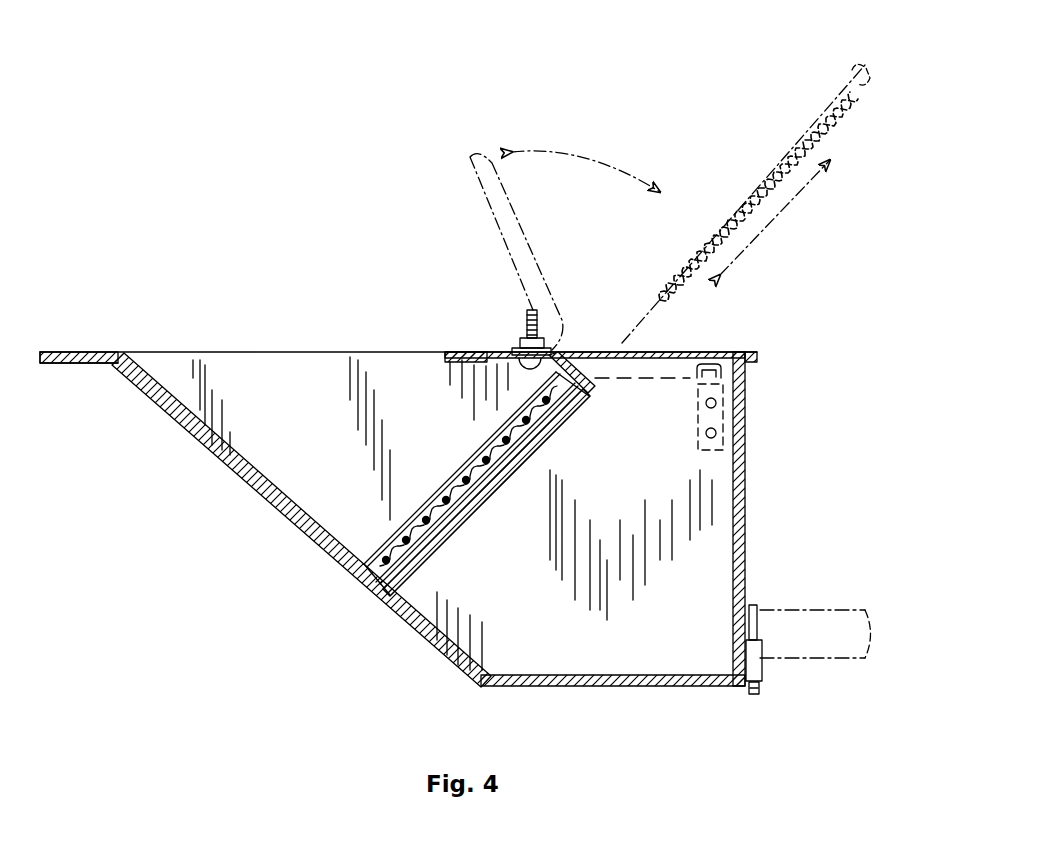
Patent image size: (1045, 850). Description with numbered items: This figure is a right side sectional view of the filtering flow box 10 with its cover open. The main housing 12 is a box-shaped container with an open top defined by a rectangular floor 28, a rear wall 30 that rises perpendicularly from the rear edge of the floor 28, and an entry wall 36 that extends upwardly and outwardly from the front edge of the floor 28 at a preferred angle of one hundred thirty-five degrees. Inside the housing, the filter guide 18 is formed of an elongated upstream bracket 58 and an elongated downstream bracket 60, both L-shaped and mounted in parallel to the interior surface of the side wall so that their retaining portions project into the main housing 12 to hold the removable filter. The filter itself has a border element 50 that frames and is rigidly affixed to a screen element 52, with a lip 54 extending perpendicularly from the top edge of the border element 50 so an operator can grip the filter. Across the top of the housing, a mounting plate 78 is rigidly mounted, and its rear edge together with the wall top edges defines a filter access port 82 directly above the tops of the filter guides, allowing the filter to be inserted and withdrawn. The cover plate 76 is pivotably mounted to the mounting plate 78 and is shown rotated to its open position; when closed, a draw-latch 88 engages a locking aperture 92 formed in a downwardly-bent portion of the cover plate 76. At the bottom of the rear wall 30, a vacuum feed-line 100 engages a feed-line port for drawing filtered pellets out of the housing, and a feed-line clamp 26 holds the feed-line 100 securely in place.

The filtering flow box 10 is at (118, 186).
The main housing 12 is at (220, 607).
The filter guide 18 is at (475, 460).
The feed-line clamp 26 is at (762, 681).
The floor 28 is at (568, 681).
The rear wall 30 is at (746, 510).
The entry wall 36 is at (250, 478).
The border element 50 is at (855, 95).
The screen element 52 is at (787, 156).
The lip 54 is at (853, 66).
The upstream bracket 58 is at (442, 497).
The downstream bracket 60 is at (473, 525).
The cover plate 76 is at (508, 221).
The mounting plate 78 is at (513, 366).
The filter access port 82 is at (683, 352).
The draw-latch 88 is at (713, 417).
The locking aperture 92 is at (730, 352).
The vacuum feed-line 100 is at (808, 645).